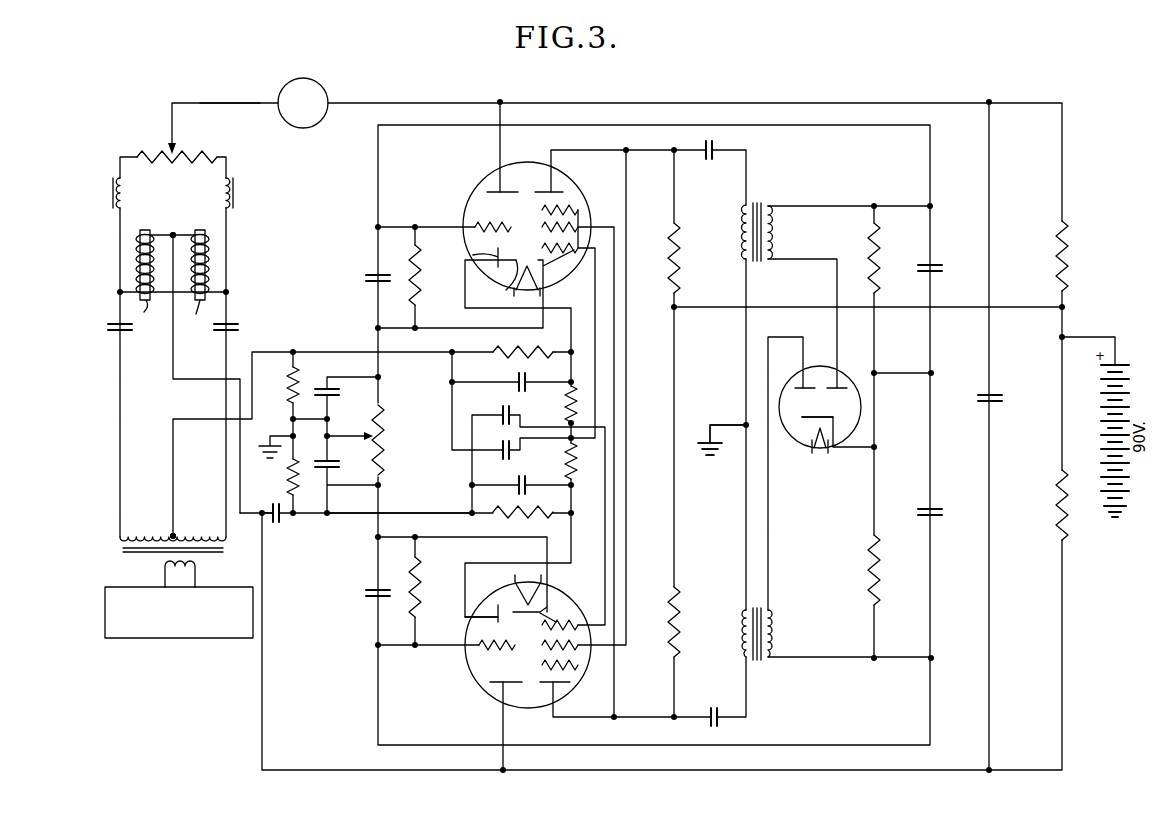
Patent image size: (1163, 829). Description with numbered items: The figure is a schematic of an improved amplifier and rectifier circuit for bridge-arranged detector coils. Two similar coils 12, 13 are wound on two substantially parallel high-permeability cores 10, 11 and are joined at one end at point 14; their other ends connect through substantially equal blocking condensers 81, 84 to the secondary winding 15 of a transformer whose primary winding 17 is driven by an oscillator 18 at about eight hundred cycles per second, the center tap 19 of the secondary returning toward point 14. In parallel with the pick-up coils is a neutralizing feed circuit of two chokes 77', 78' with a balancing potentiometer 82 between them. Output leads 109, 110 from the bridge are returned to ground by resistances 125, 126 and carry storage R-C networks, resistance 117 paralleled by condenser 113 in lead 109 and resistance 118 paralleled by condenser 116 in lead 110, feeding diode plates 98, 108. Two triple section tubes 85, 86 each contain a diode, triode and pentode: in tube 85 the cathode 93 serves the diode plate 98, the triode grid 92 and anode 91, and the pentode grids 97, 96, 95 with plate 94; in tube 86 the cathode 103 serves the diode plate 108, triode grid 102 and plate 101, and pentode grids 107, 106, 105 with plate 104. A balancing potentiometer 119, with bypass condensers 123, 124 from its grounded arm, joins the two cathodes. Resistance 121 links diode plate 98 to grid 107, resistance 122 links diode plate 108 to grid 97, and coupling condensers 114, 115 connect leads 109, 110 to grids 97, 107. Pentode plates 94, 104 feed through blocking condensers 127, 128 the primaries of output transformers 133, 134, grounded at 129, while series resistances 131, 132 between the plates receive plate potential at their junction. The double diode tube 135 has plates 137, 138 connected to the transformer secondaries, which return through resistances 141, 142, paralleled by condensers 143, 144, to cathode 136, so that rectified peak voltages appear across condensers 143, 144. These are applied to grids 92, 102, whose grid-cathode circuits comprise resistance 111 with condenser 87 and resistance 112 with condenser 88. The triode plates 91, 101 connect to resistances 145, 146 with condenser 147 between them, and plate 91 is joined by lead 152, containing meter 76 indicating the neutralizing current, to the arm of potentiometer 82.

The lead 152 is at (242, 96).
The meter 76 is at (324, 86).
The balancing potentiometer 82 is at (172, 168).
The choke 77' is at (100, 182).
The choke 78' is at (248, 182).
The common point 14 is at (173, 232).
The coil 12 is at (136, 254).
The coil 13 is at (209, 254).
The core 10 is at (151, 317).
The core 11 is at (187, 317).
The blocking condenser 81 is at (114, 322).
The blocking condenser 84 is at (236, 320).
The output lead 109 is at (258, 352).
The resistance 125 is at (287, 382).
The resistance 126 is at (287, 468).
The bypass condenser 123 is at (326, 388).
The bypass condenser 124 is at (332, 471).
The balancing potentiometer 119 is at (386, 416).
The output lead 110 is at (404, 512).
The secondary winding 15 is at (161, 532).
The center tap 19 is at (176, 534).
The primary winding 17 is at (187, 571).
The oscillator 18 is at (165, 638).
The vacuum tube 85 is at (533, 162).
The anode 91 is at (496, 188).
The plate 94 is at (558, 190).
The grid 92 is at (479, 224).
The grid 95 is at (574, 204).
The grid 96 is at (578, 225).
The grid 97 is at (574, 252).
The diode plate 98 is at (472, 240).
The cathode 93 is at (506, 292).
The condenser 87 is at (372, 276).
The resistance 111 is at (412, 258).
The resistance 117 is at (493, 350).
The condenser 113 is at (516, 380).
The coupling condenser 115 is at (500, 412).
The coupling condenser 114 is at (512, 450).
The condenser 116 is at (526, 484).
The resistance 118 is at (526, 510).
The resistance 121 is at (582, 412).
The resistance 122 is at (583, 470).
The vacuum tube 86 is at (490, 710).
The condenser 88 is at (372, 597).
The resistance 112 is at (422, 586).
The diode plate 108 is at (468, 619).
The grid 102 is at (480, 646).
The plate 101 is at (494, 684).
The plate 104 is at (549, 696).
The grid 105 is at (580, 665).
The grid 106 is at (544, 646).
The grid 107 is at (562, 626).
The cathode 103 is at (545, 608).
The blocking condenser 127 is at (705, 158).
The resistance 131 is at (681, 266).
The output transformer 133 is at (758, 200).
The output transformer 134 is at (760, 665).
The resistance 141 is at (868, 242).
The condenser 143 is at (938, 256).
The resistance 145 is at (1070, 255).
The ground 129 is at (742, 422).
The double diode tube 135 is at (797, 445).
The plate 138 is at (804, 387).
The plate 137 is at (838, 388).
The cathode 136 is at (806, 414).
The resistance 142 is at (868, 564).
The resistance 132 is at (672, 605).
The blocking condenser 128 is at (720, 722).
The condenser 147 is at (988, 394).
The condenser 144 is at (932, 506).
The resistance 146 is at (1058, 502).